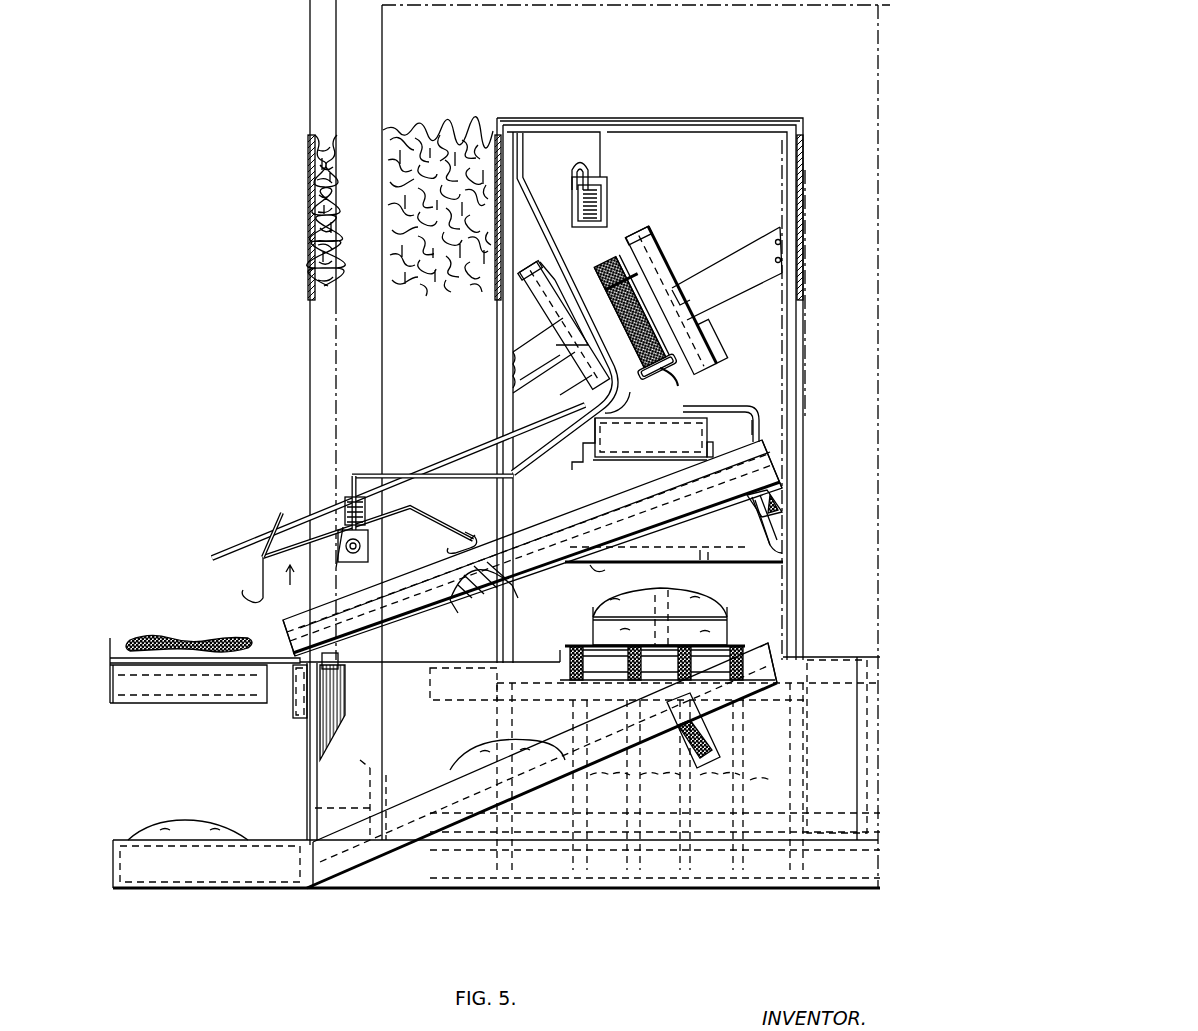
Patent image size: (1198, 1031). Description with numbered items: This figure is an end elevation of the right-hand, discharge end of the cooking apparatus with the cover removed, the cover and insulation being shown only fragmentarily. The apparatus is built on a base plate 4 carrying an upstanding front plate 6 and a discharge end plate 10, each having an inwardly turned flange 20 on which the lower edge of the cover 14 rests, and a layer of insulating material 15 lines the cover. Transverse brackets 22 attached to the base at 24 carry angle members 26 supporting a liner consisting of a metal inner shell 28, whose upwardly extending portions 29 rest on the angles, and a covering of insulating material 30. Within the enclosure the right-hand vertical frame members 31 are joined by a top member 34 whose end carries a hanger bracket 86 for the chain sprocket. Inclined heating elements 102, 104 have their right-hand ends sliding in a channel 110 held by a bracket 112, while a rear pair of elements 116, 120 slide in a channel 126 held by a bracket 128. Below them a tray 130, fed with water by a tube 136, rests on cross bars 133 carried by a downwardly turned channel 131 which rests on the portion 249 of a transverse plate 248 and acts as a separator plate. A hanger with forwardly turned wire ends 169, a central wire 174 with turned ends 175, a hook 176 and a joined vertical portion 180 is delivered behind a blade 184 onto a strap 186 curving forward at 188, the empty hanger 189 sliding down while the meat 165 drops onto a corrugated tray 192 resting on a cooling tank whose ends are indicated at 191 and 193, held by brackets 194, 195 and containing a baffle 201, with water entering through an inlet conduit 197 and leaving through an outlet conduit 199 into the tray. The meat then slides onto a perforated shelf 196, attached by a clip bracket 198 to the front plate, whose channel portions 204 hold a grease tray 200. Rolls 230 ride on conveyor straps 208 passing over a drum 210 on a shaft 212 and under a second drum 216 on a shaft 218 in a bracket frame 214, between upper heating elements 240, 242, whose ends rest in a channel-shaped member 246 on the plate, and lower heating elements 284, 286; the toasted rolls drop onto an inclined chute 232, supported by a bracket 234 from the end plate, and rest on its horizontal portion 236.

The base plate 4 is at (530, 890).
The front plate 6 is at (305, 752).
The discharge end plate 10 is at (318, 775).
The cover 14 is at (308, 213).
The insulating material layer 15 is at (330, 222).
The inwardly turned flanges 20 is at (338, 660).
The brackets 22 is at (396, 888).
The bracket attachment 24 is at (345, 888).
The angle members 26 is at (310, 815).
The metal inner shell 28 is at (485, 135).
The outwardly and upwardly extending portions 29 is at (386, 790).
The insulating material 30 is at (433, 130).
The vertical frame members 31 is at (497, 338).
The longitudinally extending member 34 is at (700, 125).
The hanger bracket 86 is at (600, 190).
The upper heating element 102 is at (545, 312).
The lower heating element 104 is at (580, 388).
The channel 110 is at (560, 347).
The bracket 112 is at (555, 365).
The heating element 116 is at (658, 255).
The heating element 120 is at (708, 345).
The channel 126 is at (672, 298).
The bracket 128 is at (732, 290).
The tray 130 is at (672, 443).
The downwardly turned channel 131 is at (583, 444).
The cross bars 133 is at (643, 465).
The tube 136 is at (628, 392).
The piece of meat 165 is at (608, 278).
The lower wire ends 169 is at (678, 388).
The central horizontally extending wire 174 is at (440, 525).
The side ends 175 is at (340, 564).
The hook 176 is at (590, 175).
The vertically extending portion 180 is at (318, 508).
The blade 184 is at (540, 262).
The strap 186 is at (552, 210).
The strap portion 188 is at (470, 456).
The empty hanger 189 is at (290, 589).
The upper tank end 191 is at (782, 485).
The corrugated tray 192 is at (762, 445).
The lower tank end 193 is at (418, 625).
The bracket 194 is at (785, 508).
The bracket 195 is at (590, 570).
The shelf 196 is at (270, 655).
The inlet conduit 197 is at (782, 553).
The clip bracket 198 is at (292, 700).
The outlet conduit 199 is at (748, 408).
The tray 200 is at (175, 705).
The baffle 201 is at (482, 602).
The channel portions 204 is at (122, 690).
The conveyor straps 208 is at (730, 640).
The drum 210 is at (560, 650).
The shaft 212 is at (535, 668).
The bracket frame 214 is at (450, 745).
The second drum 216 is at (608, 778).
The shaft 218 is at (775, 790).
The rolls 230 is at (685, 605).
The inclined chute 232 is at (785, 650).
The bracket 234 is at (722, 715).
The horizontally extending portion 236 is at (268, 892).
The heating element 240 is at (600, 520).
The heating element 242 is at (697, 548).
The channel-shaped member 246 is at (708, 554).
The plate 248 is at (780, 515).
The longitudinally extending portion 249 is at (498, 512).
The heating element 284 is at (600, 625).
The heating element 286 is at (665, 606).